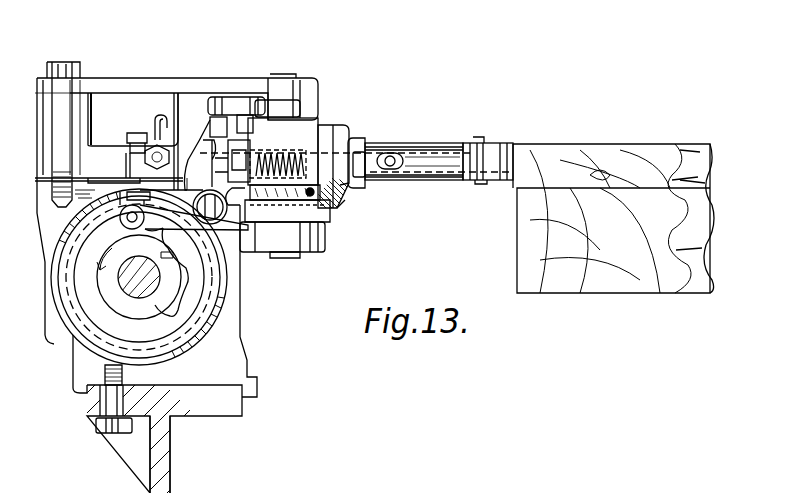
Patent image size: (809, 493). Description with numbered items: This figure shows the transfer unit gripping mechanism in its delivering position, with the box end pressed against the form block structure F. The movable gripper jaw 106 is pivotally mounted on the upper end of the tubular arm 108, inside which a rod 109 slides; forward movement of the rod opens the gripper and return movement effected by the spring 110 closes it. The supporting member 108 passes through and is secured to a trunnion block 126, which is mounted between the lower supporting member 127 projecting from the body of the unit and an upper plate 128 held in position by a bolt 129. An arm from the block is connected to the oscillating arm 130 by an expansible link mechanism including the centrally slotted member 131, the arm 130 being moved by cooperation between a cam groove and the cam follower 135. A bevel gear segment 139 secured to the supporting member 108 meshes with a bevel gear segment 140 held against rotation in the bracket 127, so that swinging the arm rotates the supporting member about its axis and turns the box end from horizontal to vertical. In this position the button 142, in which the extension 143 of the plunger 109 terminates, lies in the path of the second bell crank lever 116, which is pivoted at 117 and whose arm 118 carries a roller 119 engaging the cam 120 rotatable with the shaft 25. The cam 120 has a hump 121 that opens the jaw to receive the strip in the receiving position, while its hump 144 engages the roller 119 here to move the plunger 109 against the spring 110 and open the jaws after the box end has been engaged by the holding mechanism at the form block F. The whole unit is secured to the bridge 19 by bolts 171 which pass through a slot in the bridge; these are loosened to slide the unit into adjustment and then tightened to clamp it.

The bolt 129 is at (52, 62).
The upper plate 128 is at (257, 88).
The centrally slotted member 131 is at (225, 96).
The oscillating arm 130 is at (170, 120).
The cam follower 135 is at (130, 190).
The second bell crank lever 116 is at (185, 153).
The button 142 is at (230, 147).
The trunnion block 126 is at (303, 122).
The spring 110 is at (293, 155).
The bevel gear segment 140 is at (330, 212).
The lower supporting member 127 is at (306, 255).
The extension of plunger 143 is at (341, 133).
The bevel gear segment 139 is at (350, 188).
The tubular arm 108 is at (414, 145).
The rod 109 is at (440, 160).
The movable gripper jaw 106 is at (488, 145).
The form block structure F is at (518, 246).
The cam 120 is at (100, 283).
The hump 121 is at (168, 328).
The shaft 25 is at (127, 292).
The hump 144 is at (158, 258).
The roller 119 is at (125, 225).
The arm 118 is at (180, 266).
The pivot 117 is at (211, 223).
The bolts 171 is at (106, 433).
The bridge 19 is at (172, 465).